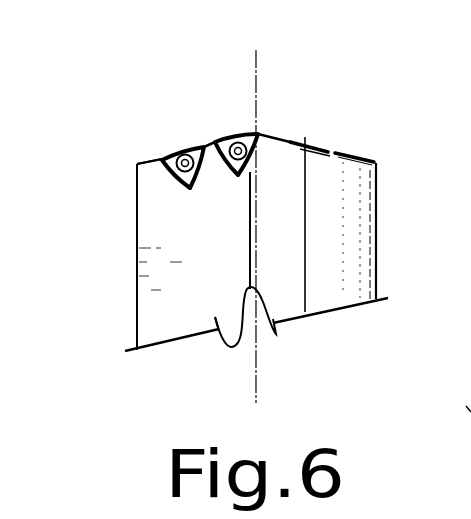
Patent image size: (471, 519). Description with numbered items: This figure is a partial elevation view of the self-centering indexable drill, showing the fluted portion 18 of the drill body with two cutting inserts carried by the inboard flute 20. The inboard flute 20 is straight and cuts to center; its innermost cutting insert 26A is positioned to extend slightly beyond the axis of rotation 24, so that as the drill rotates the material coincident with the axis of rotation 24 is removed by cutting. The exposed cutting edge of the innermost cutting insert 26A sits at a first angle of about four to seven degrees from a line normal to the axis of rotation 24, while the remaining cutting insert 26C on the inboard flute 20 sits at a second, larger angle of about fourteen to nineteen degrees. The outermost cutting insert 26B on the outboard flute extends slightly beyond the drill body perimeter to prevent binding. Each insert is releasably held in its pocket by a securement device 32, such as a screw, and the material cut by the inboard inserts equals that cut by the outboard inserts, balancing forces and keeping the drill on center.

The fluted portion 18 is at (322, 240).
The inboard flute 20 is at (165, 311).
The axis of rotation 24 is at (258, 72).
The innermost cutting insert 26A is at (222, 135).
The outermost cutting insert 26B is at (357, 154).
The remaining cutting insert 26C is at (187, 147).
The securement device 32 is at (165, 153).